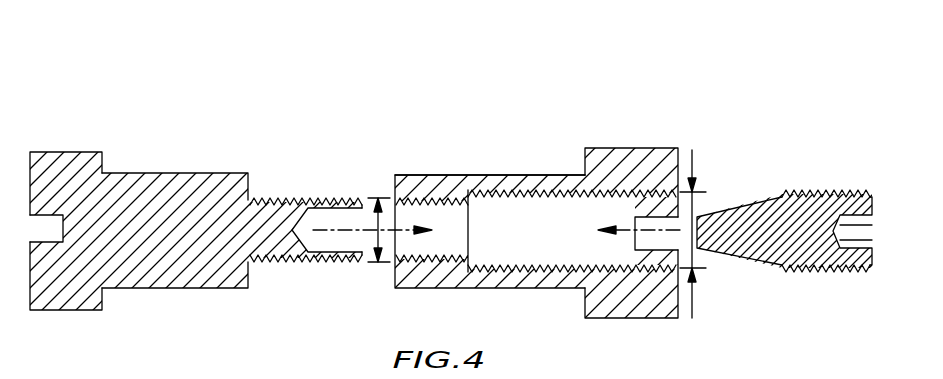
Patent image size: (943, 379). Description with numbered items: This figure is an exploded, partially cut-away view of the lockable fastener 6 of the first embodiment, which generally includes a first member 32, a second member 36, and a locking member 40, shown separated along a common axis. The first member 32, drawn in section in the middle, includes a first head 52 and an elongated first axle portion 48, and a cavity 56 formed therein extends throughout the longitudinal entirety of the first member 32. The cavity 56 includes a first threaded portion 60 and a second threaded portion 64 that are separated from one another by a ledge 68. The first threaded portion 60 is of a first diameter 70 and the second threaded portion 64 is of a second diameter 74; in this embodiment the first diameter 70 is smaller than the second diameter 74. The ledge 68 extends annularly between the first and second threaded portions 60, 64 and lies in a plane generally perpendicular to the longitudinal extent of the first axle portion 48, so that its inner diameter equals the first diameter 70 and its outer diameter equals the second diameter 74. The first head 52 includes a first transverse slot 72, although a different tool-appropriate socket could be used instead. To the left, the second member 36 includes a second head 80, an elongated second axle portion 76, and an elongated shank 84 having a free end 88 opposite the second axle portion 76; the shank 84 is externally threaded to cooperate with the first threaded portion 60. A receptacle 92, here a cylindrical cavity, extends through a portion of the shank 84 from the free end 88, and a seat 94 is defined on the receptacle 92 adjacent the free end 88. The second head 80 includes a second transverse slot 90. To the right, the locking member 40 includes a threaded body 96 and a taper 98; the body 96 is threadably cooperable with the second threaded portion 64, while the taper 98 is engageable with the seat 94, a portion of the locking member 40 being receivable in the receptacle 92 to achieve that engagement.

The lockable fastener 6 is at (384, 110).
The first member 32 is at (474, 160).
The second member 36 is at (133, 165).
The locking member 40 is at (780, 178).
The first axle portion 48 is at (430, 175).
The first head 52 is at (632, 148).
The cavity 56 is at (522, 234).
The first threaded portion 60 is at (456, 206).
The second threaded portion 64 is at (568, 197).
The ledge 68 is at (470, 263).
The first diameter 70 is at (380, 196).
The first transverse slot 72 is at (640, 247).
The second diameter 74 is at (694, 156).
The second axle portion 76 is at (158, 173).
The second head 80 is at (62, 152).
The shank 84 is at (263, 200).
The free end 88 is at (362, 262).
The second transverse slot 90 is at (45, 242).
The receptacle 92 is at (300, 216).
The seat 94 is at (362, 200).
The threaded body 96 is at (822, 192).
The taper 98 is at (742, 206).